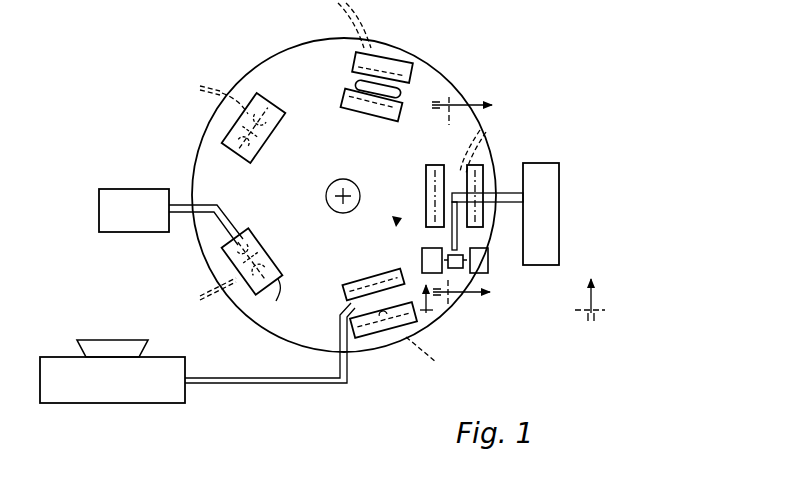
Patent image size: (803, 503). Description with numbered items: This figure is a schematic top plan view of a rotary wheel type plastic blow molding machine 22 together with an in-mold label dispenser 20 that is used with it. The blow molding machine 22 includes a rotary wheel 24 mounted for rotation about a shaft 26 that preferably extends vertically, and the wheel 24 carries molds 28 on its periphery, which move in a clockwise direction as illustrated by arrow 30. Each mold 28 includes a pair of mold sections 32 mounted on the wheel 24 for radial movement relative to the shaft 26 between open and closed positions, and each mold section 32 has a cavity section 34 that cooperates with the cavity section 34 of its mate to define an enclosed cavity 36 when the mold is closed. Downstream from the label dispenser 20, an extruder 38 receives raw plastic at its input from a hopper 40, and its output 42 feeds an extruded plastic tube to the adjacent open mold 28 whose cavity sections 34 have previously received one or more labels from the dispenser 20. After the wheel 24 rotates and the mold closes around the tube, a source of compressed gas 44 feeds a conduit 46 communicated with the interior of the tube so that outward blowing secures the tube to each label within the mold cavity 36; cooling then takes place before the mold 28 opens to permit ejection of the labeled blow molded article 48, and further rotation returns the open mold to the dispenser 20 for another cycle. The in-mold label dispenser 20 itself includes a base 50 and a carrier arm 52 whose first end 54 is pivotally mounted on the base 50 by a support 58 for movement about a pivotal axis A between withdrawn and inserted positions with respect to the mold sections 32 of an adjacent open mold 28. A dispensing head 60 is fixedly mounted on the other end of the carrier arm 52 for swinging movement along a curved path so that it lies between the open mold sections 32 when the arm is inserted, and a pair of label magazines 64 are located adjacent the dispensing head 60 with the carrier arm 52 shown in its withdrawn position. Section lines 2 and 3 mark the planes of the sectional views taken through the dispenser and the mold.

The in-mold label dispenser 20 is at (565, 152).
The plastic blow molding machine 22 is at (455, 71).
The rotary wheel 24 is at (298, 43).
The shaft 26 is at (330, 185).
The mold 28 is at (246, 87).
The arrow 30 is at (393, 187).
The mold section 32 is at (280, 86).
The cavity section 34 is at (368, 284).
The enclosed cavity 36 is at (257, 155).
The extruder 38 is at (133, 385).
The hopper 40 is at (85, 350).
The output 42 is at (228, 382).
The source of compressed gas 44 is at (117, 188).
The conduit 46 is at (205, 204).
The labeled blow molded article 48 is at (388, 80).
The base 50 is at (553, 228).
The carrier arm 52 is at (452, 248).
The first end 54 is at (454, 210).
The support 58 is at (511, 196).
The dispensing head 60 is at (472, 264).
The label magazine 64 is at (424, 263).
The section line 2- 2 is at (474, 199).
The section line 3- 3 is at (509, 295).
The pivotal axis A is at (479, 131).